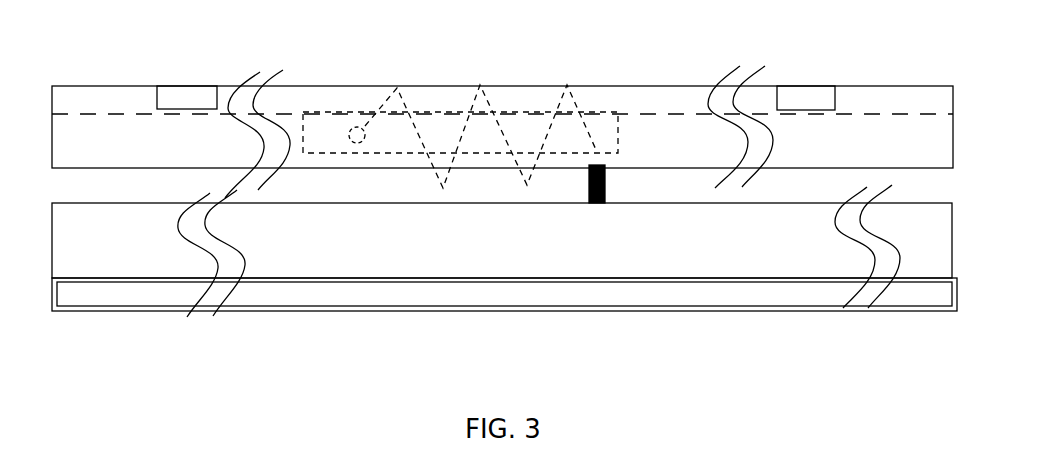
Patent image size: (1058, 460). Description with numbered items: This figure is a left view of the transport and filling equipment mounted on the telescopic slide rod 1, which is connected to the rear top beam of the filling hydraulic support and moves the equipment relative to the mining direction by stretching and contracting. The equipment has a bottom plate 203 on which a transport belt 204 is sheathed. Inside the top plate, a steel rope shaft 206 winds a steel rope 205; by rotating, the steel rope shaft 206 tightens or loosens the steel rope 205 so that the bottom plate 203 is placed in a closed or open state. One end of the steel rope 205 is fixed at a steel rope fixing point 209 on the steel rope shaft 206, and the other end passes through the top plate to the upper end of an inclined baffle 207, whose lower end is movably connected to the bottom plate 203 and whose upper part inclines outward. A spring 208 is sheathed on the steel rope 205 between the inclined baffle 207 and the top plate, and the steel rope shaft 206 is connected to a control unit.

The telescopic slide rod 1 is at (188, 98).
The bottom plate 203 is at (392, 295).
The transport belt 204 is at (770, 310).
The steel rope 205 is at (582, 100).
The steel rope shaft 206 is at (522, 133).
The inclined baffle 207 is at (122, 255).
The spring 208 is at (603, 202).
The steel rope fixing point 209 is at (357, 133).